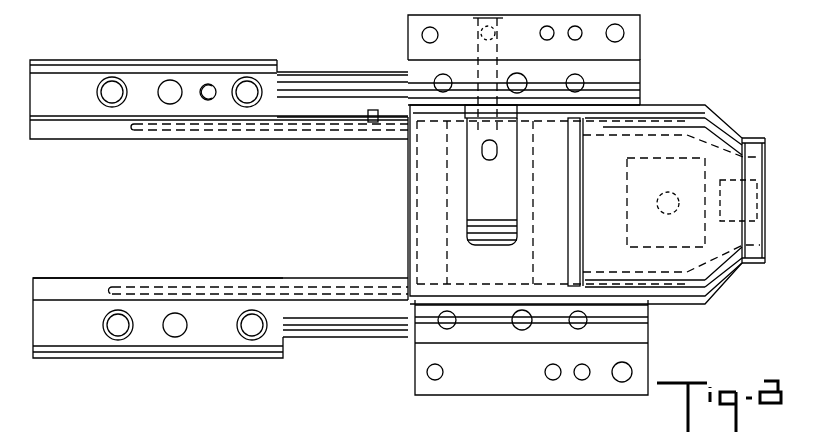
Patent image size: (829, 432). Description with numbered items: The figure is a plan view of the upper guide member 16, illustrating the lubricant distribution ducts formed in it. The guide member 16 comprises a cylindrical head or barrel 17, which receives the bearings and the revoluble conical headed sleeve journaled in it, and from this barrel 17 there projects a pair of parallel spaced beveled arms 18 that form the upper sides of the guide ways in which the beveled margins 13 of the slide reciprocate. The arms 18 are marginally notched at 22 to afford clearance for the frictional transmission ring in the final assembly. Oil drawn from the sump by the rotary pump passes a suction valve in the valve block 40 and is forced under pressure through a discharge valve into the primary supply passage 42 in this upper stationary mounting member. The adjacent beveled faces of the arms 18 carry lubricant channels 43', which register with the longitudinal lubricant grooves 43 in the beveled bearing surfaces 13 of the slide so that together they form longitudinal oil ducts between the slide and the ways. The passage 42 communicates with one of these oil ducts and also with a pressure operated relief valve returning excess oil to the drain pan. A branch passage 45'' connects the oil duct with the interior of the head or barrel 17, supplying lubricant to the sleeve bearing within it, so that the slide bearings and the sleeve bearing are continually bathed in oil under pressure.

The beveled margins 13 is at (528, 366).
The guide member 16 is at (640, 88).
The cylindrical head or barrel 17 is at (420, 191).
The beveled arms 18 is at (85, 136).
The marginal notch 22 is at (325, 72).
The valve block 40 is at (640, 46).
The passage 42 is at (478, 52).
The longitudinal lubricant grooves 43 is at (341, 423).
The lubricant channels 43' is at (259, 202).
The branch passage 45'' is at (491, 175).